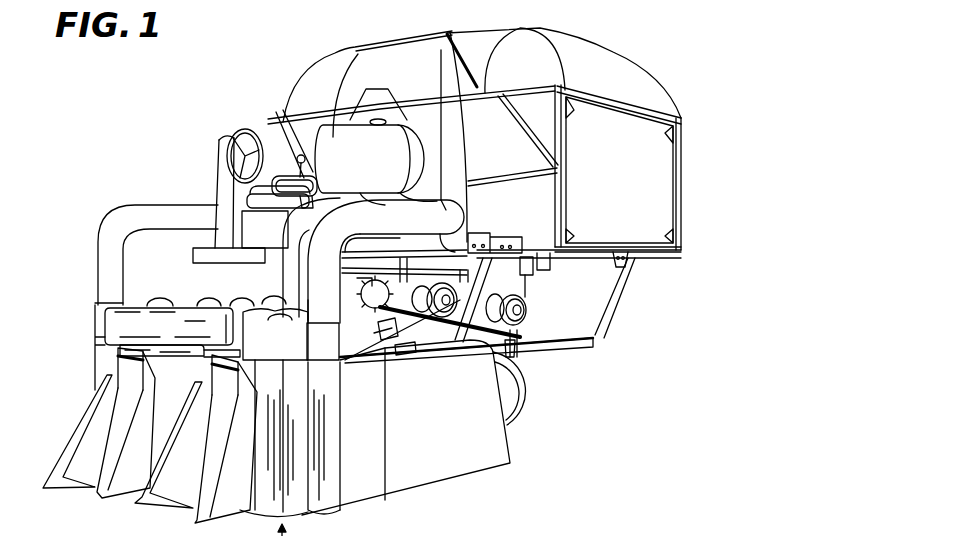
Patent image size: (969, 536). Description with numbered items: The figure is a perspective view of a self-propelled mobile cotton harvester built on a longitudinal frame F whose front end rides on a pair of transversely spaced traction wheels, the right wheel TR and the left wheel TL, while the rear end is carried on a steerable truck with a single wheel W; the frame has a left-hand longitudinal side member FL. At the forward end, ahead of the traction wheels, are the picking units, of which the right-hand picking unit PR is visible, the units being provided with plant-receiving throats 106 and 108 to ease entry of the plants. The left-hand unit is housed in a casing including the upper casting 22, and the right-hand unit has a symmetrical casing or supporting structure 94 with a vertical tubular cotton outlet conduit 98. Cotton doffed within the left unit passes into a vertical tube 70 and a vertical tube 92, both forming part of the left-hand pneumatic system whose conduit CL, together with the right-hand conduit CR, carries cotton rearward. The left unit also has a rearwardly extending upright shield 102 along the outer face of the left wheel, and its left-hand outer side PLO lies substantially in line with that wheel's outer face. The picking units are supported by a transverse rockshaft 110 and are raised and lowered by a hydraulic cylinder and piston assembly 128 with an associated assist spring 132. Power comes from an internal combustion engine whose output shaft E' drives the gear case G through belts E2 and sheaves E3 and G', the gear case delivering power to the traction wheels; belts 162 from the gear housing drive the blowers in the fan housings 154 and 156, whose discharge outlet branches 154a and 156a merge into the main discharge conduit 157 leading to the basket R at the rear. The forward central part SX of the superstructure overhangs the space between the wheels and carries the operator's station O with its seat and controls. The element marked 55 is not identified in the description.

The receptacle or basket R is at (613, 52).
The main discharge conduit 157 is at (403, 76).
The discharge outlet branch 156a is at (452, 161).
The fan housing 156 is at (397, 193).
The discharge outlet branch 154a is at (320, 134).
The operator's station O is at (280, 152).
The forward central part of the superstructure SX is at (193, 253).
The right-hand conduit CR is at (142, 205).
The left-hand conduit CL is at (455, 217).
The vertical tube 70 is at (306, 293).
The fan housing 154 is at (348, 250).
The belts 162 is at (357, 283).
The gear case G is at (416, 306).
The sheave G' is at (418, 316).
The output shaft E' is at (532, 297).
The belts E2 is at (520, 252).
The sheave E3 is at (524, 318).
The shaft 55 is at (527, 280).
The left-hand longitudinal side member FL is at (553, 333).
The longitudinal frame F is at (572, 343).
The assist spring 132 is at (516, 349).
The wheel W is at (513, 413).
The left traction wheel TL is at (410, 343).
The transverse rockshaft 110 is at (383, 337).
The hydraulic cylinder and piston assembly 128 is at (403, 355).
The vertical tube 92 is at (326, 352).
The upright shield 102 is at (445, 478).
The left-hand outer side PLO is at (340, 505).
The upper casting 22 is at (290, 352).
The vertical tubular cotton outlet conduit 98 is at (105, 315).
The casing or supporting structure 94 is at (132, 310).
The right traction wheel TR is at (215, 304).
The right-hand picking unit PR is at (94, 363).
The plant-receiving throat 106 is at (93, 488).
The plant-receiving throat 108 is at (193, 517).